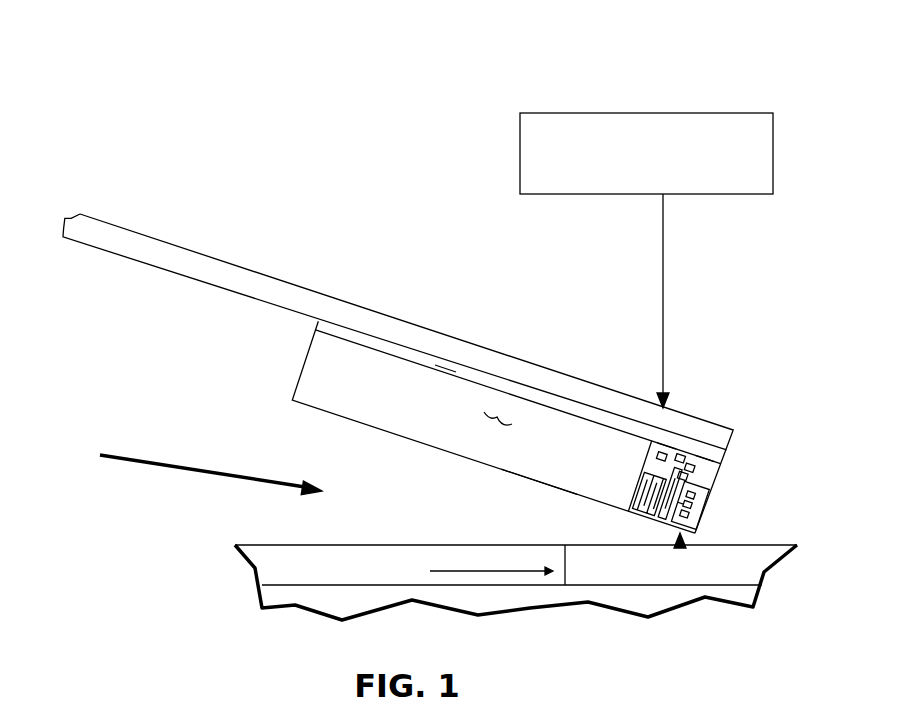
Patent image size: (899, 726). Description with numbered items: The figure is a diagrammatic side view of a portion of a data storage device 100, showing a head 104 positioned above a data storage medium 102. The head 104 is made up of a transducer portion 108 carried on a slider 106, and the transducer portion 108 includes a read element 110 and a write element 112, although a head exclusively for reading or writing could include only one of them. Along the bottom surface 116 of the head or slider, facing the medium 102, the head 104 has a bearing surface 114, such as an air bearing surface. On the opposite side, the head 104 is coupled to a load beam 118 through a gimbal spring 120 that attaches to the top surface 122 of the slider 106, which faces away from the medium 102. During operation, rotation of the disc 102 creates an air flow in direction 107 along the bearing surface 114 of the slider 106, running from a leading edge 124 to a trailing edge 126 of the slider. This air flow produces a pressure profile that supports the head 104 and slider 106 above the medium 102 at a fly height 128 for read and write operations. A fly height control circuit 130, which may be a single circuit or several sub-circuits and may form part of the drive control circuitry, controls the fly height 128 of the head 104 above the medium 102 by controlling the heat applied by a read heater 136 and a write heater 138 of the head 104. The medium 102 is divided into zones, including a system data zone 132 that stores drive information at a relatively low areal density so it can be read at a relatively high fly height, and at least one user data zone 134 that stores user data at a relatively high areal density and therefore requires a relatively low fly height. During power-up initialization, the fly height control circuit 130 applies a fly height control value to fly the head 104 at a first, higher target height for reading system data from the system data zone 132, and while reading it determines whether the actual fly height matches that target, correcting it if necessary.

The data storage device 100 is at (88, 56).
The data storage medium 102 is at (742, 572).
The head 104 is at (729, 422).
The slider 106 is at (497, 417).
The air flow direction 107 is at (461, 571).
The transducer portion 108 is at (729, 466).
The read element 110 is at (665, 436).
The write element 112 is at (705, 448).
The bearing surface 114 is at (436, 468).
The bottom surface 116 is at (578, 495).
The load beam 118 is at (338, 312).
The gimbal spring 120 is at (448, 366).
The top surface 122 is at (568, 413).
The leading edge 124 is at (305, 367).
The trailing edge 126 is at (712, 489).
The fly height 128 is at (679, 548).
The fly height control circuit 130 is at (520, 153).
The system data zone 132 is at (602, 572).
The user data zone 134 is at (313, 572).
The read heater 136 is at (647, 468).
The write heater 138 is at (652, 446).